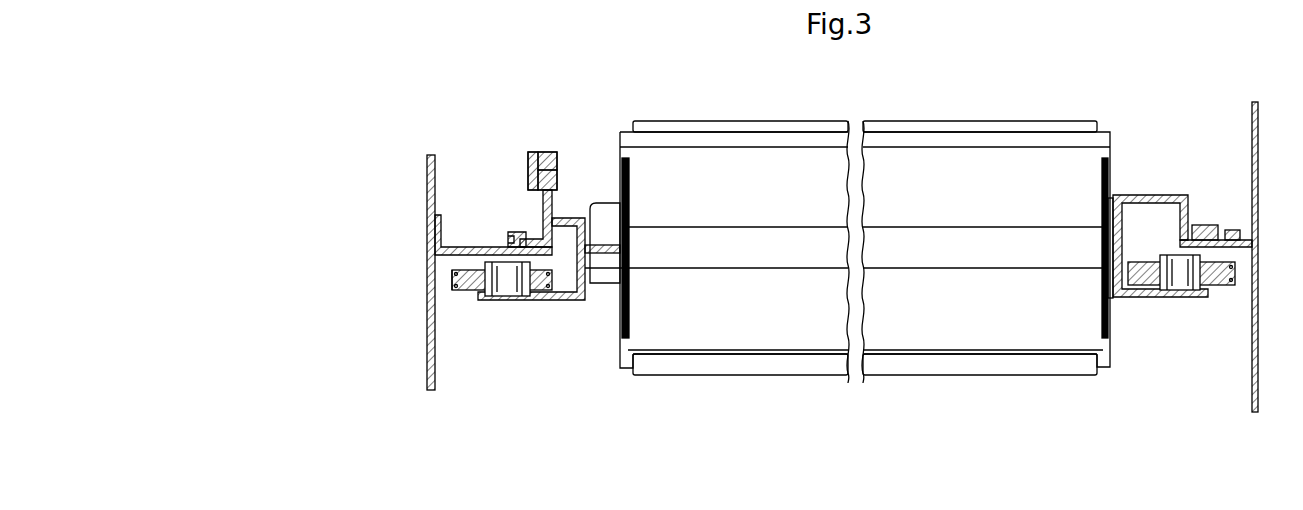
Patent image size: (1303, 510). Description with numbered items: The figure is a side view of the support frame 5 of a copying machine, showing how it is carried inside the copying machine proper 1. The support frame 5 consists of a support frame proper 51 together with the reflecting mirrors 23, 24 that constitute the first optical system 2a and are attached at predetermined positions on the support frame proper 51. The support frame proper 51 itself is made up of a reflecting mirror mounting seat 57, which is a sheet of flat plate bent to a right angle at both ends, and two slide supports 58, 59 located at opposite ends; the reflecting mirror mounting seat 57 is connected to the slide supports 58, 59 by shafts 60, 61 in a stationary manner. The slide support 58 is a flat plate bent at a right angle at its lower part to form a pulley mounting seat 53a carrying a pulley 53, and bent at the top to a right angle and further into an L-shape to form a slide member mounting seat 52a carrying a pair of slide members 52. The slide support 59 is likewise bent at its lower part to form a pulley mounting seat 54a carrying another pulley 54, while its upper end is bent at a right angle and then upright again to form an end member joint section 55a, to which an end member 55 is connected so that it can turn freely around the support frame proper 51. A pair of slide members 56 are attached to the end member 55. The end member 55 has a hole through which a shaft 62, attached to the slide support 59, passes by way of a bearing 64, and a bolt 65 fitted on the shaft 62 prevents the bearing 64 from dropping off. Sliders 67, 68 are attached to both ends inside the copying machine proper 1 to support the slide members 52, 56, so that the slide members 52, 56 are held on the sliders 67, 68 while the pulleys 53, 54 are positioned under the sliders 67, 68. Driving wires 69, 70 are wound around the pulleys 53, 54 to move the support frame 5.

The copying machine proper 1 is at (424, 178).
The 1st optical system 2a is at (806, 120).
The support frame 5 is at (772, 381).
The reflecting mirror 23 is at (934, 160).
The reflecting mirror 24 is at (965, 325).
The support frame proper 51 is at (711, 120).
The slide member 52 is at (1206, 225).
The slide member mounting seat 52a is at (1232, 229).
The pulley 53 is at (1148, 287).
The pulley mounting seat 53a is at (1179, 298).
The pulley 54 is at (533, 287).
The pulley mounting seat 54a is at (500, 299).
The end member 55 is at (540, 214).
The end member joint section 55a is at (564, 160).
The slide member 56 is at (525, 233).
The reflecting mirror mounting seat 57 is at (630, 194).
The slide support 58 is at (1152, 195).
The slide support 59 is at (556, 200).
The shaft 60 is at (1104, 232).
The shaft 61 is at (598, 263).
The shaft 62 is at (559, 172).
The bearing 64 is at (546, 152).
The bolt 65 is at (530, 168).
The slider 67 is at (1259, 262).
The slider 68 is at (462, 247).
The driving wire 69 is at (1238, 286).
The driving wire 70 is at (452, 284).